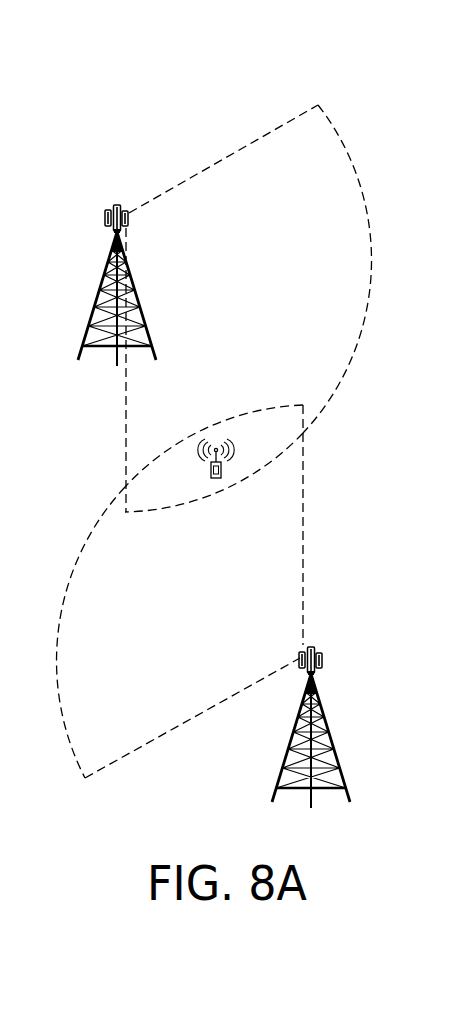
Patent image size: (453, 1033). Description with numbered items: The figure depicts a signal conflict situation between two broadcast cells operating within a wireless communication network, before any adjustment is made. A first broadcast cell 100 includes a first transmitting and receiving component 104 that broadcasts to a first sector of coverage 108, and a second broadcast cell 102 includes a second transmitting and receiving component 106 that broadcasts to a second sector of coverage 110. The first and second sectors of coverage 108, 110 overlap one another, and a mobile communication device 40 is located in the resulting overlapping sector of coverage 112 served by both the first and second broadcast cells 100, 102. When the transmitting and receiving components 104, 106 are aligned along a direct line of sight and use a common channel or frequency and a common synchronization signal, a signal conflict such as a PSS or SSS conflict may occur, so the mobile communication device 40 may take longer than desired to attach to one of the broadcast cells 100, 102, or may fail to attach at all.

The mobile communication device 40 is at (216, 478).
The first broadcast cell 100 is at (101, 284).
The second broadcast cell 102 is at (330, 737).
The first transmitting and receiving component 104 is at (125, 210).
The second transmitting and receiving component 106 is at (307, 646).
The first sector of coverage 108 is at (328, 248).
The second sector of coverage 110 is at (272, 560).
The overlapping sector of coverage 112 is at (160, 487).